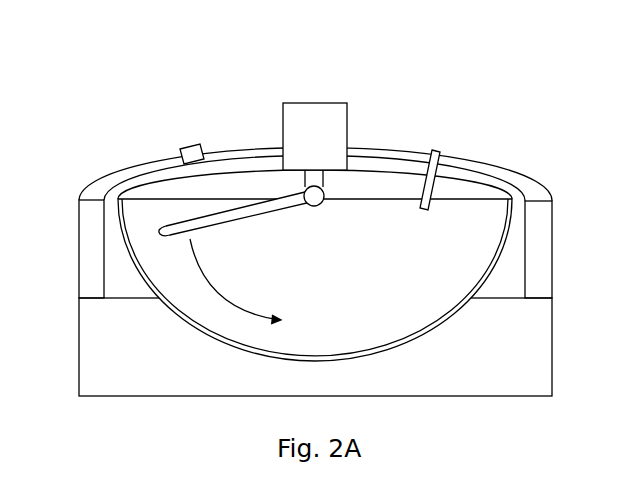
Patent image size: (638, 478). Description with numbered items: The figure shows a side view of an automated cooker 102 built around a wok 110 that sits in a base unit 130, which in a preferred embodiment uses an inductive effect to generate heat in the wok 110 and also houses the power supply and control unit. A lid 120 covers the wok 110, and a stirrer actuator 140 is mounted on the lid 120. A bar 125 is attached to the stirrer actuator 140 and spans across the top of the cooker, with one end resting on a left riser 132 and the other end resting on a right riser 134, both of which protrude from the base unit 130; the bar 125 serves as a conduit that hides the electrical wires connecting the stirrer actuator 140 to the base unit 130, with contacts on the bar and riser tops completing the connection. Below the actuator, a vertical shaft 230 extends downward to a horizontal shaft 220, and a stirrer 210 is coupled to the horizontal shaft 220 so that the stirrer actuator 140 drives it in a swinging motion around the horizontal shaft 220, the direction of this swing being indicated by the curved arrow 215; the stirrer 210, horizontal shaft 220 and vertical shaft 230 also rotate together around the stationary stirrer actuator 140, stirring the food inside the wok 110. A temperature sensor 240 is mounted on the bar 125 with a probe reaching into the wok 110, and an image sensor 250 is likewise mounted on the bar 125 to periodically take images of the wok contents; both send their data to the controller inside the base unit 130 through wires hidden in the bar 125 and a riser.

The automated cooker 102 is at (462, 55).
The wok 110 is at (315, 265).
The lid 120 is at (243, 171).
The bar 125 is at (393, 148).
The base unit 130 is at (315, 347).
The left riser 132 is at (90, 247).
The right riser 134 is at (538, 247).
The stirrer actuator 140 is at (323, 103).
The stirrer 210 is at (238, 217).
The direction of paddle rotation 215 is at (255, 286).
The horizontal shaft 220 is at (316, 206).
The vertical shaft 230 is at (325, 177).
The temperature sensor 240 is at (436, 150).
The image sensor 250 is at (185, 146).